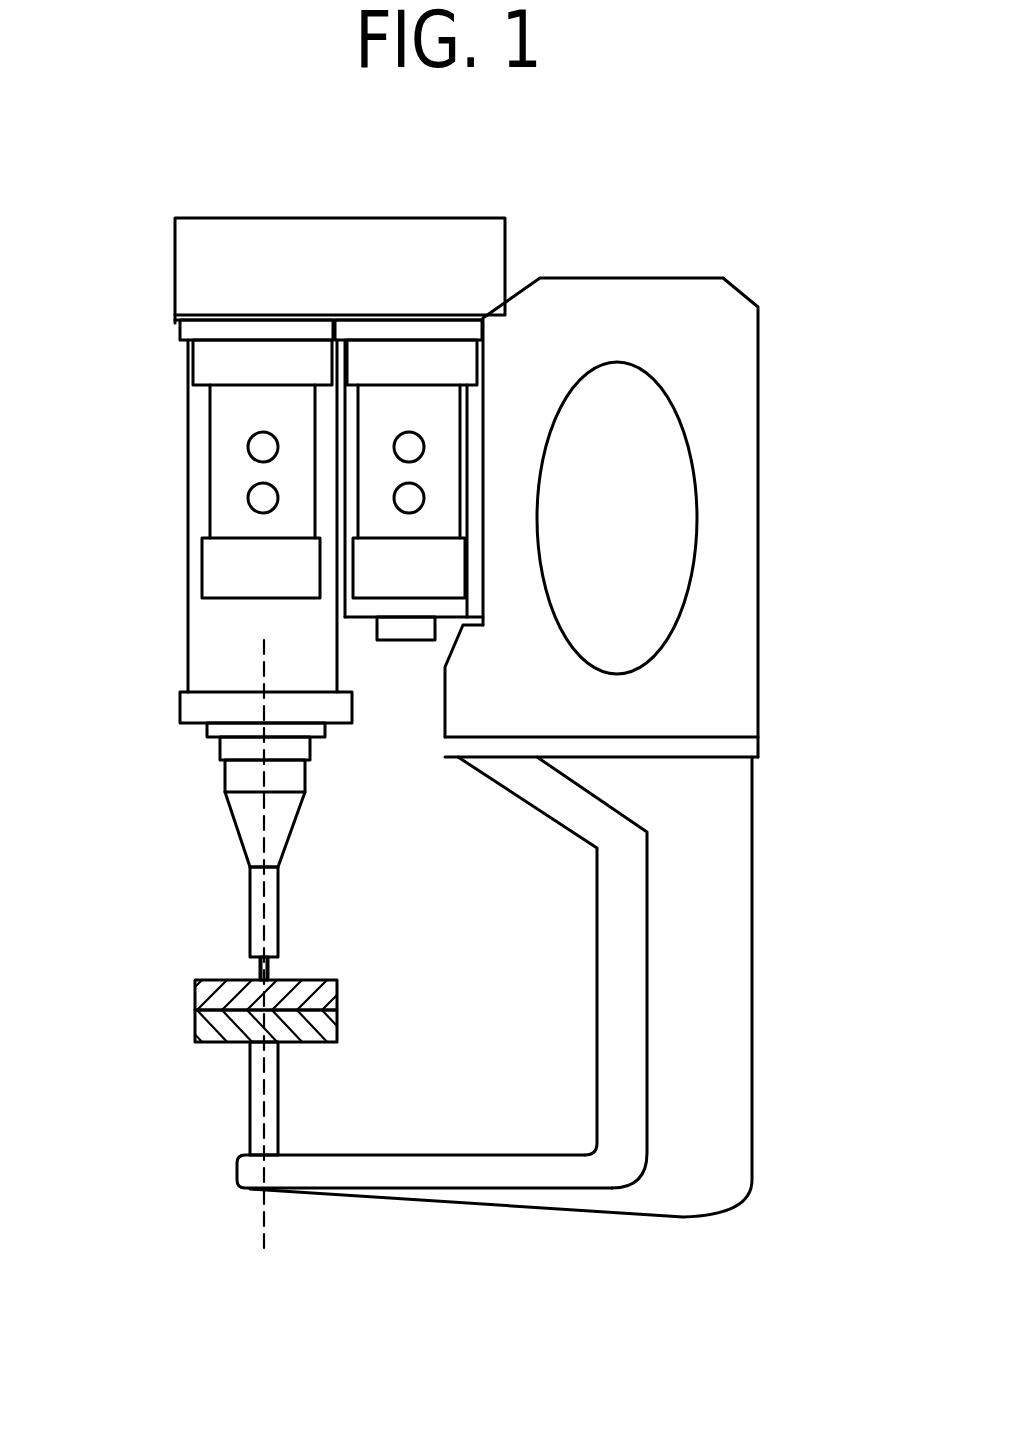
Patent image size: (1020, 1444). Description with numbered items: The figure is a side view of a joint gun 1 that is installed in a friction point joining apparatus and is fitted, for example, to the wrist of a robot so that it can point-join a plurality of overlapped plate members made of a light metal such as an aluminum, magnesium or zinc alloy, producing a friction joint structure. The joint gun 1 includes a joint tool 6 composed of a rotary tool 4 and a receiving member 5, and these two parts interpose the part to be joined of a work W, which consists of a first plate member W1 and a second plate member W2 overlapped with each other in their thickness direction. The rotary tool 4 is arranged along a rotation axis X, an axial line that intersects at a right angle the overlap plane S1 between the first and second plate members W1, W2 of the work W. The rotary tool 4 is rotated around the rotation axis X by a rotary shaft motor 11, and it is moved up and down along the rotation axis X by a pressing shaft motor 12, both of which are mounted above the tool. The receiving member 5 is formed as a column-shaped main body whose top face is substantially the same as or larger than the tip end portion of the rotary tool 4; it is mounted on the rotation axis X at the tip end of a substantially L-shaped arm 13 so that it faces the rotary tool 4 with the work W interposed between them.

The joint gun 1 is at (762, 400).
The rotary tool 4 is at (247, 914).
The receiving member 5 is at (200, 1098).
The joint tool 6 is at (192, 945).
The rotary shaft motor 11 is at (206, 453).
The pressing shaft motor 12 is at (469, 430).
The substantially L-shaped arm 13 is at (680, 1219).
The overlap plane S1 is at (217, 982).
The work W is at (336, 996).
The first plate member W1 is at (318, 982).
The second plate member W2 is at (333, 1020).
The rotation axis X is at (264, 1225).